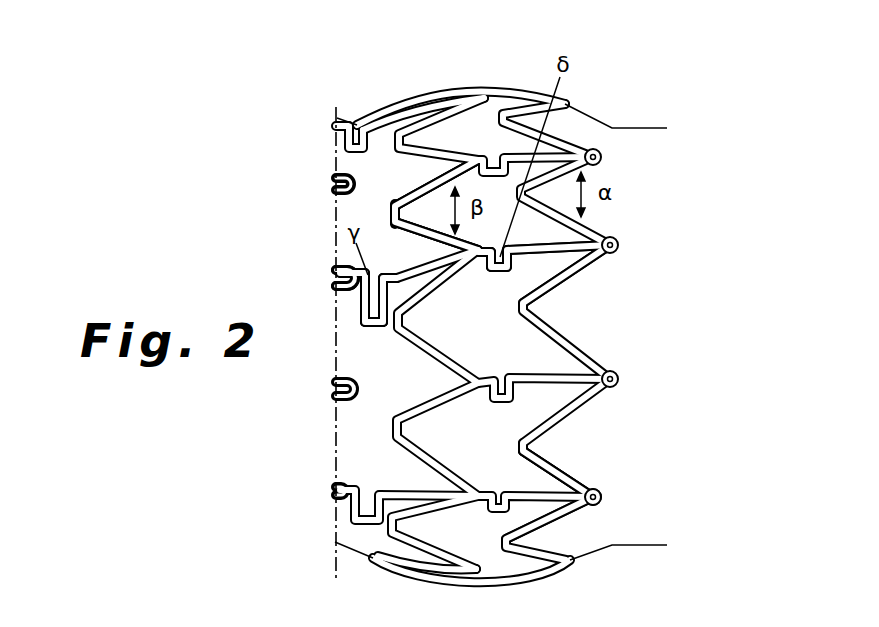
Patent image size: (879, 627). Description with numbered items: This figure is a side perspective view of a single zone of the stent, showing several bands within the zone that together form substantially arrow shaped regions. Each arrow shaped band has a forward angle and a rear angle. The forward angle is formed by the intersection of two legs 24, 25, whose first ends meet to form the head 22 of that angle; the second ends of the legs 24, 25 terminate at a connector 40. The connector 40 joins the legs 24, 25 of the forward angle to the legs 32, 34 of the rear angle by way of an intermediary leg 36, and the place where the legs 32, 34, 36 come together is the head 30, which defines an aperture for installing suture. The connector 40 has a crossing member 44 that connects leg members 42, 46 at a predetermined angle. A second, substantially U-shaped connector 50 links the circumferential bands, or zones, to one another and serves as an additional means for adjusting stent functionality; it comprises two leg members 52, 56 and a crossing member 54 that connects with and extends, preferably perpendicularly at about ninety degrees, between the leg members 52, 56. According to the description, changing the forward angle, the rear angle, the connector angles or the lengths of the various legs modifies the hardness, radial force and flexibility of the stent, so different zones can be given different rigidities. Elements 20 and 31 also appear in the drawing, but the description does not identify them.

The stent 20 is at (396, 212).
The head 22 is at (393, 212).
The leg 24 is at (435, 205).
The leg 25 is at (428, 238).
The head 30 is at (603, 497).
The apex 31 is at (530, 448).
The leg 32 is at (550, 515).
The leg 34 is at (577, 478).
The intermediary leg 36 is at (557, 470).
The connector 40 is at (503, 272).
The leg member 42 is at (492, 273).
The crossing member 44 is at (512, 272).
The leg member 46 is at (514, 272).
The connector 50 is at (360, 324).
The leg member 52 is at (340, 312).
The crossing member 54 is at (380, 331).
The leg member 56 is at (387, 303).